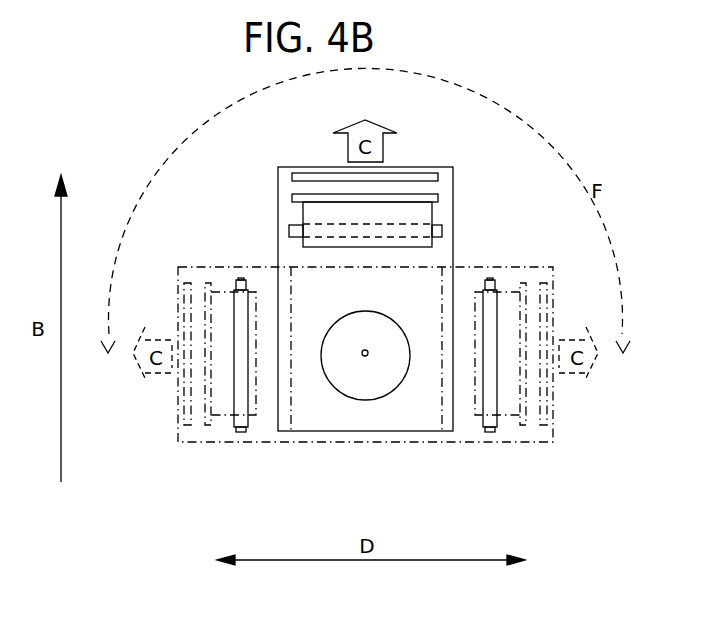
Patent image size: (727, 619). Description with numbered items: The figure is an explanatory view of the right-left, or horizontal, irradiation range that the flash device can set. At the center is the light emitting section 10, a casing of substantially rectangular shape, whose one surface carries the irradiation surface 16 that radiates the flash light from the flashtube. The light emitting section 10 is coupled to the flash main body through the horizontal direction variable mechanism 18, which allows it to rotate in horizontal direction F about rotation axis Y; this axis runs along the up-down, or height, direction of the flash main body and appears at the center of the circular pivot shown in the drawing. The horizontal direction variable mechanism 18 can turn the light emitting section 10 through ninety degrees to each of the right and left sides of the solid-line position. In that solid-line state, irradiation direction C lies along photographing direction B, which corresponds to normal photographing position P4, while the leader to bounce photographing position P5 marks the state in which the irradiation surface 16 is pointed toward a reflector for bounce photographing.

The light emitting section 10 is at (423, 432).
The irradiation surface 16 is at (418, 167).
The horizontal direction variable mechanism 18 is at (325, 365).
The rotation axis Y is at (365, 356).
The normal photographing position P4 is at (453, 207).
The bounce photographing position P5 is at (232, 267).